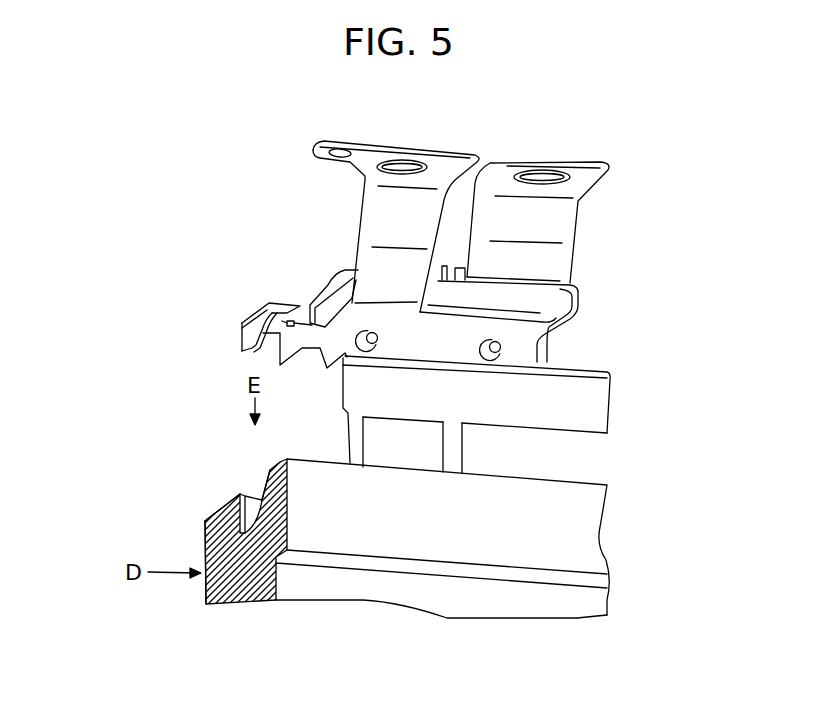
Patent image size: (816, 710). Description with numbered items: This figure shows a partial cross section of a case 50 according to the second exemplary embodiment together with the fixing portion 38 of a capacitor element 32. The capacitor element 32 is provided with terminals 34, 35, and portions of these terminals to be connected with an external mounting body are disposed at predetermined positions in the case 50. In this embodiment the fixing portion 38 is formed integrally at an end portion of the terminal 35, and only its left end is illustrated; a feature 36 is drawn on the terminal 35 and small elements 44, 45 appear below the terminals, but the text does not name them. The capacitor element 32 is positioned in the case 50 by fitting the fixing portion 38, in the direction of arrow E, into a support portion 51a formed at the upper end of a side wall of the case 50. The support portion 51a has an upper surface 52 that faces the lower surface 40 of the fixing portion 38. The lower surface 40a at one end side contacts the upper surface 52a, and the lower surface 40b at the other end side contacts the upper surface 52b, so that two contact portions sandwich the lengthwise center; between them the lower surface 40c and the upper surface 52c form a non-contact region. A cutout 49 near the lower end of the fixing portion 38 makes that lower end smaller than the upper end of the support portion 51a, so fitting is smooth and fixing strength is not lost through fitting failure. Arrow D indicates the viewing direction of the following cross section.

The capacitor element 32 is at (227, 212).
The terminal 34 is at (567, 205).
The terminal 35 is at (383, 195).
The tab 36 is at (332, 297).
The fixing portion 38 is at (102, 263).
The lower surface 40 is at (160, 263).
The lower surface 40a is at (265, 315).
The lower surface 40b is at (243, 352).
The lower surface 40c is at (243, 325).
The rivet 44 is at (503, 347).
The base plate 45 is at (500, 360).
The cutout 49 is at (243, 353).
The case 50 is at (587, 537).
The support portion 51a is at (263, 499).
The upper surface 52 is at (102, 423).
The upper surface 52a is at (233, 500).
The upper surface 52b is at (205, 525).
The upper surface 52c is at (223, 507).